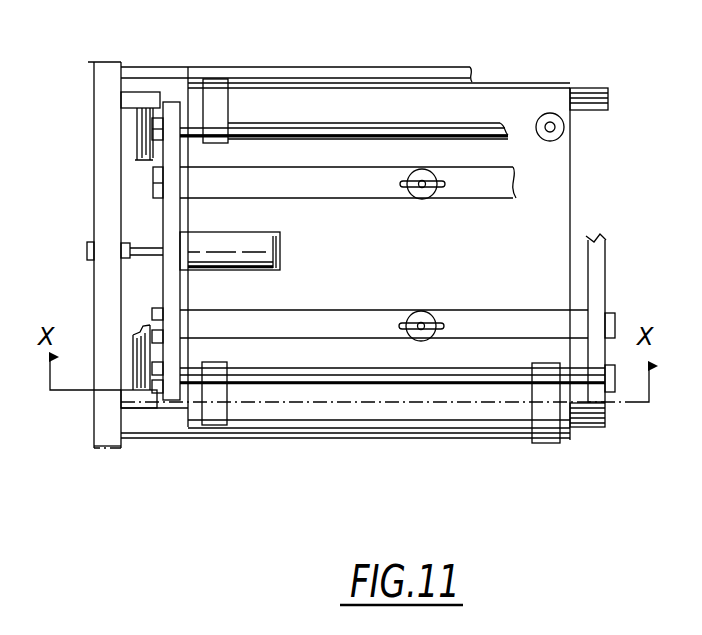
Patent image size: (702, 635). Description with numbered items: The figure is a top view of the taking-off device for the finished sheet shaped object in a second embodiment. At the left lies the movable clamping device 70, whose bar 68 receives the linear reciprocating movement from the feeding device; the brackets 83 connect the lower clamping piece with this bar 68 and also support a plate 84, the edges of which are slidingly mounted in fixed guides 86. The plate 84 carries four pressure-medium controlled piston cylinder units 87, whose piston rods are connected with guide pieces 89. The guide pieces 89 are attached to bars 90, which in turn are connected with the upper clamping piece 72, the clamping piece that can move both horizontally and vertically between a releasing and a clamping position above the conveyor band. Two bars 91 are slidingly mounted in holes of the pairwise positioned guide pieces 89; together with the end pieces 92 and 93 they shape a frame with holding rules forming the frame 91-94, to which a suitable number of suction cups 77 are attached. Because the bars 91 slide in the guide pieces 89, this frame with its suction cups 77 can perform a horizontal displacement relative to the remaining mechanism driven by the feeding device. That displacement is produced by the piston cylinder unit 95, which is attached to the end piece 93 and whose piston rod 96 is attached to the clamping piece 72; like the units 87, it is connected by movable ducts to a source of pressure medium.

The bar 68 is at (147, 330).
The movable clamping device 70 is at (105, 462).
The upper clamping piece 72 is at (127, 37).
The suction cups 77 is at (421, 311).
The brackets 83 is at (135, 400).
The plate 84 is at (340, 275).
The fixed guides 86 is at (590, 97).
The piston cylinder units 87 is at (540, 118).
The guide pieces 89 is at (538, 407).
The bars 90 is at (197, 72).
The bars 91 is at (338, 130).
The end piece 92 is at (592, 235).
The end piece 93 is at (163, 208).
The frame part 94 is at (197, 183).
The piston cylinder unit 95 is at (223, 248).
The piston rod 96 is at (137, 247).